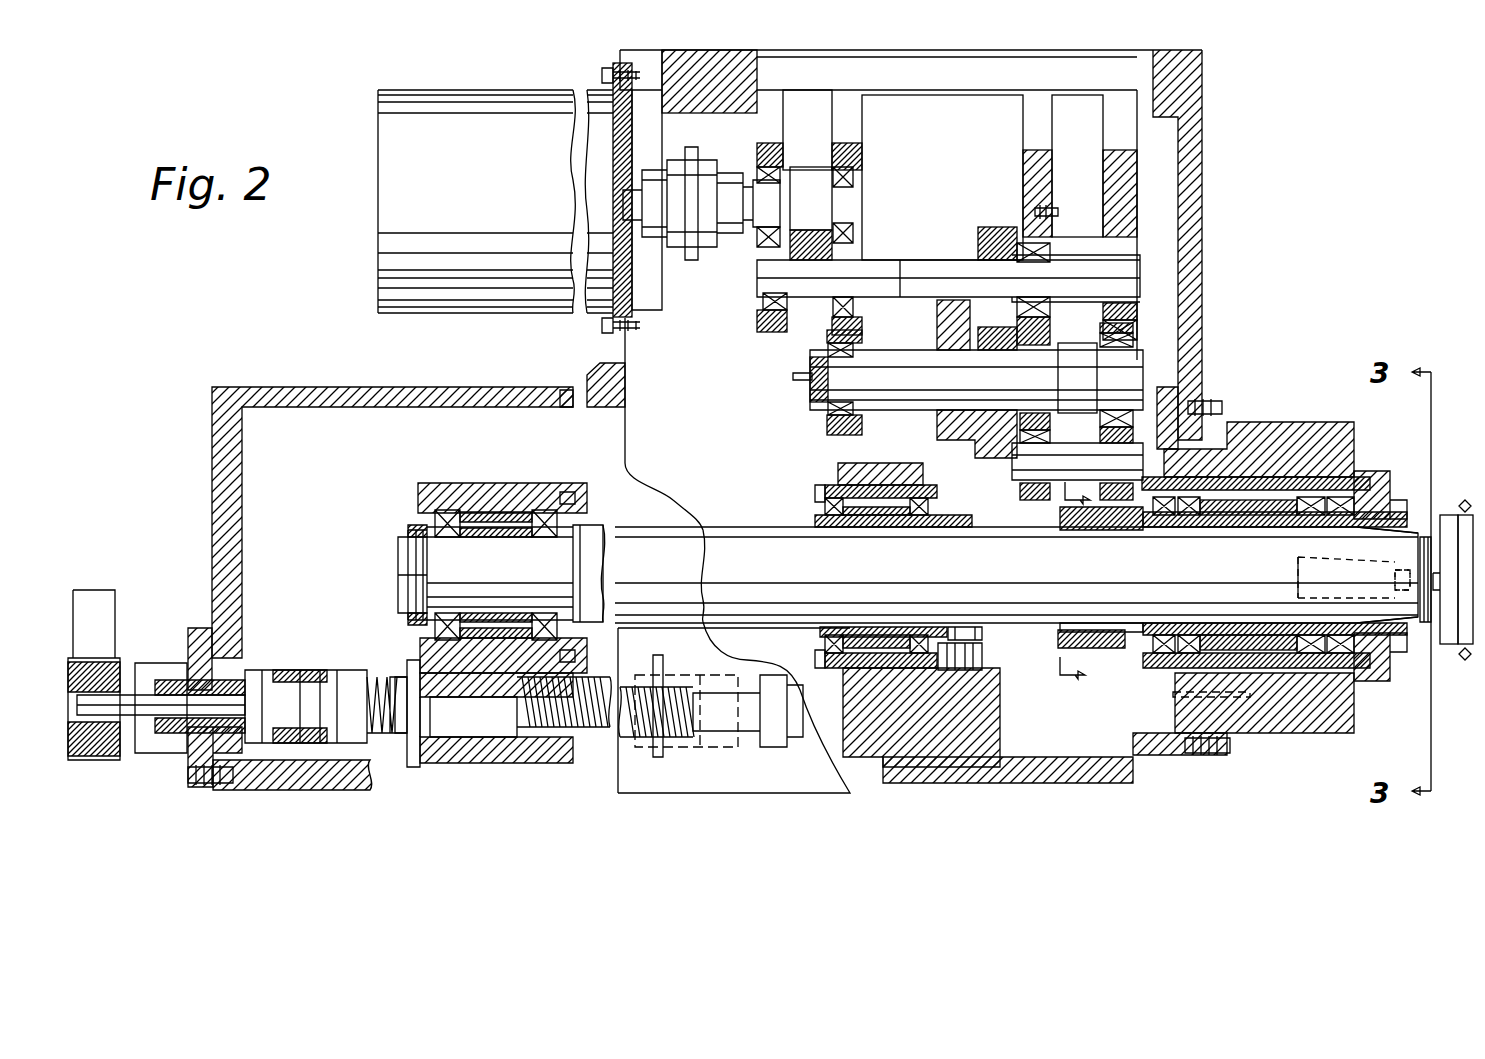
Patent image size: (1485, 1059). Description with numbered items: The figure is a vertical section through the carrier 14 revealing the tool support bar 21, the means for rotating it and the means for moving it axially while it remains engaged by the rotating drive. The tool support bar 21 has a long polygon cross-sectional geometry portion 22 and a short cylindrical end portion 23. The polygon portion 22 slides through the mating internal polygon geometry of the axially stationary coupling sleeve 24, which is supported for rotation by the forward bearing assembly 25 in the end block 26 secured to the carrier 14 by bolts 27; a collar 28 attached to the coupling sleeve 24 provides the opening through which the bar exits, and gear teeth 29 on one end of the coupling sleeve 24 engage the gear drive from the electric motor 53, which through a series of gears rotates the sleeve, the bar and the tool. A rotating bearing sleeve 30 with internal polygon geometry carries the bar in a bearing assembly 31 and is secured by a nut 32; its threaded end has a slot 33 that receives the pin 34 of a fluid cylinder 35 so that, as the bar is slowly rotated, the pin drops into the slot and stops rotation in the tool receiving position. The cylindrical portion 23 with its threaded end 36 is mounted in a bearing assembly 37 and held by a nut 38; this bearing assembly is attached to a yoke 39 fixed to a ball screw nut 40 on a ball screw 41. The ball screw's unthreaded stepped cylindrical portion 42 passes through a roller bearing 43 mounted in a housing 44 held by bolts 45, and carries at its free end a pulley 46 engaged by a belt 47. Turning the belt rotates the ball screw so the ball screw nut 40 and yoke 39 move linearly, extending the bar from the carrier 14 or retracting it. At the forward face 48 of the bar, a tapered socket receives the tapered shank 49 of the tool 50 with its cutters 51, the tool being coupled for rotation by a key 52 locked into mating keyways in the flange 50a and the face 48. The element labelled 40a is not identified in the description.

The carrier 14 is at (1210, 212).
The tool support bar 21 is at (768, 525).
The polygon cross-sectional geometry portion 22 is at (725, 540).
The cylindrical end portion 23 is at (400, 540).
The coupling sleeve 24 is at (1140, 655).
The forward bearing assembly 25 is at (1150, 655).
The end block 26 is at (1300, 422).
The bolts 27 is at (1222, 407).
The collar 28 is at (1385, 650).
The gear teeth 29 is at (1125, 650).
The bearing sleeve 30 is at (822, 640).
The bearing assembly 31 is at (818, 515).
The nut 32 is at (935, 510).
The slot 33 is at (962, 630).
The pin 34 is at (982, 636).
The fluid cylinder 35 is at (982, 660).
The threaded end 36 is at (400, 572).
The bearing assembly 37 is at (415, 628).
The nut 38 is at (405, 612).
The yoke 39 is at (440, 485).
The ball screw nut 40 is at (410, 745).
The pin 40a is at (655, 755).
The ball screw 41 is at (600, 750).
The unthreaded stepped cylindrical portion 42 is at (125, 715).
The roller bearing 43 is at (172, 735).
The housing 44 is at (195, 630).
The bolts 45 is at (200, 785).
The pulley 46 is at (95, 760).
The belt 47 is at (95, 590).
The forward face 48 is at (1408, 525).
The tapered shank 49 is at (1300, 558).
The tool 50 is at (1446, 515).
The flange 50a is at (1430, 625).
The cutters 51 is at (1465, 648).
The key 52 is at (1398, 575).
The electric motor 53 is at (414, 98).